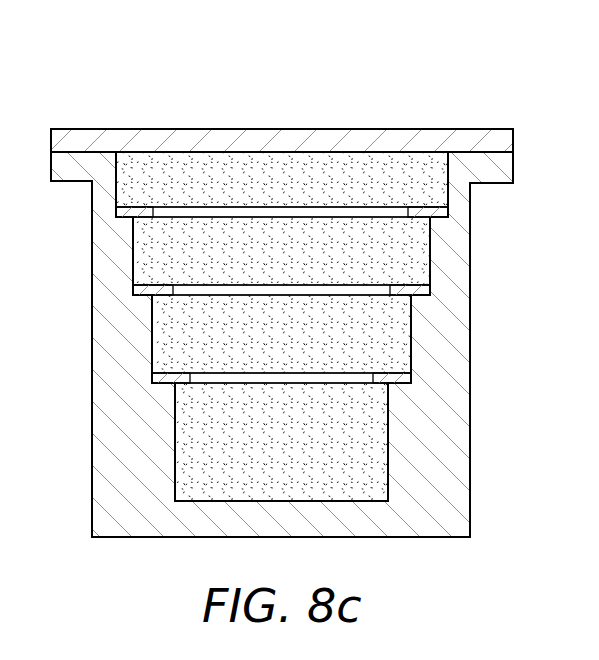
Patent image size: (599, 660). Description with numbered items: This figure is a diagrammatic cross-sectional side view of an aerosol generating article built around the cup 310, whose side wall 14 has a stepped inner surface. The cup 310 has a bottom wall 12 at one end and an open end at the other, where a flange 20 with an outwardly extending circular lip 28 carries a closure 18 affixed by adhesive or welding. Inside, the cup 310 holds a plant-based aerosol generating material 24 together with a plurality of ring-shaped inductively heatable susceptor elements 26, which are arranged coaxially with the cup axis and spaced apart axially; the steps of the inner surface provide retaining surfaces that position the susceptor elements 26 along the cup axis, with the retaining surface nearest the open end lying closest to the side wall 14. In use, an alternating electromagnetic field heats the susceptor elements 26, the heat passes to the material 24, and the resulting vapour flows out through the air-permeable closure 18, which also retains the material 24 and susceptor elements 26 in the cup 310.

The cup 310 is at (67, 91).
The closure 18 is at (401, 137).
The flange 20 is at (503, 196).
The circular lip 28 is at (493, 170).
The side wall 14 is at (462, 429).
The bottom wall 12 is at (118, 538).
The inductively heatable susceptor elements 26 is at (131, 211).
The plant-based aerosol generating material 24 is at (200, 448).